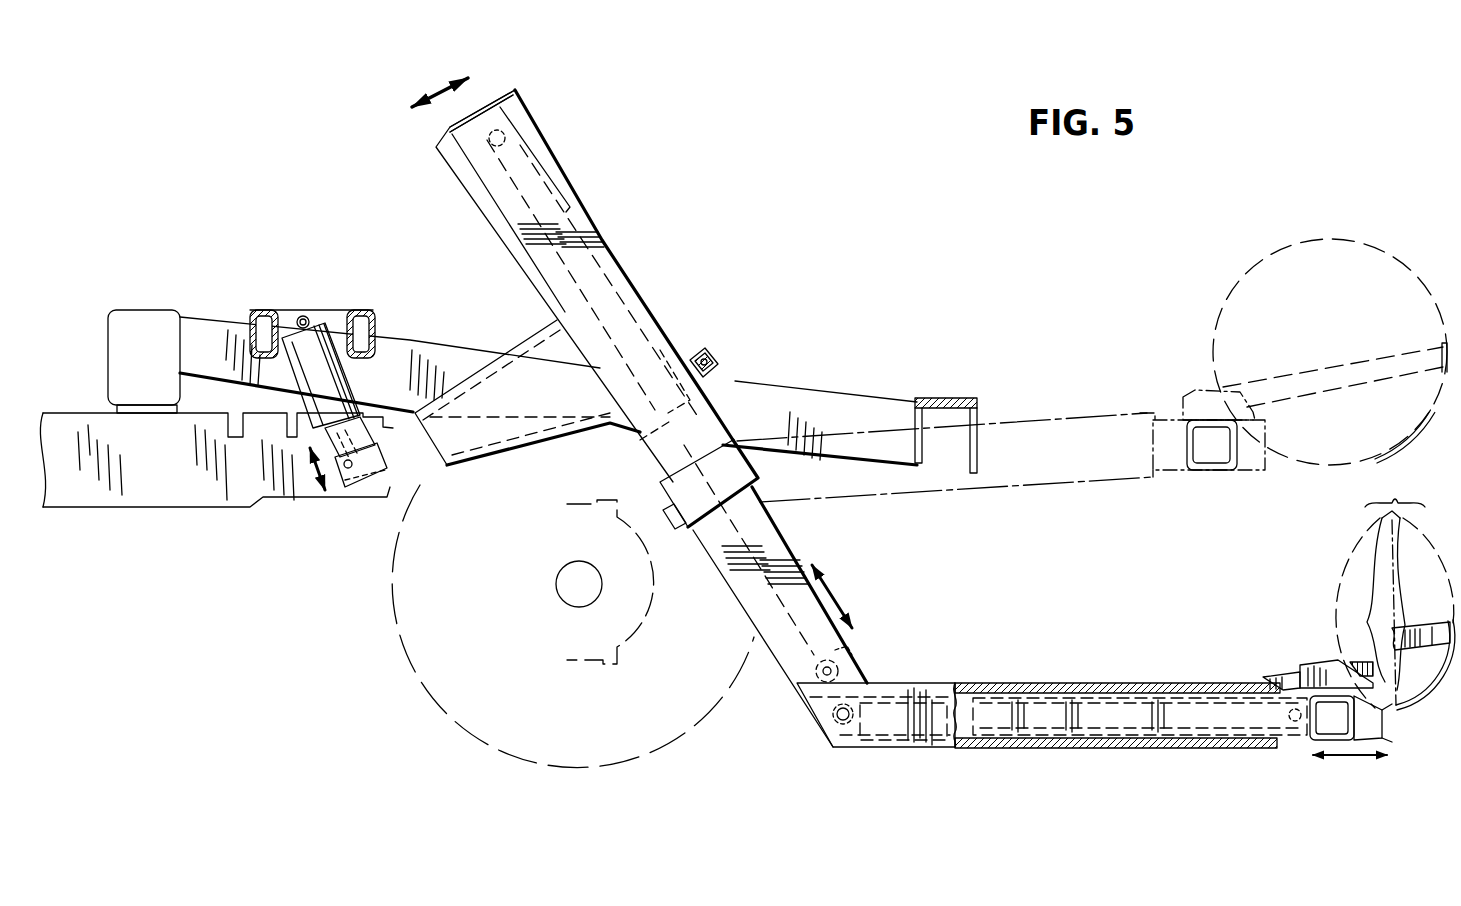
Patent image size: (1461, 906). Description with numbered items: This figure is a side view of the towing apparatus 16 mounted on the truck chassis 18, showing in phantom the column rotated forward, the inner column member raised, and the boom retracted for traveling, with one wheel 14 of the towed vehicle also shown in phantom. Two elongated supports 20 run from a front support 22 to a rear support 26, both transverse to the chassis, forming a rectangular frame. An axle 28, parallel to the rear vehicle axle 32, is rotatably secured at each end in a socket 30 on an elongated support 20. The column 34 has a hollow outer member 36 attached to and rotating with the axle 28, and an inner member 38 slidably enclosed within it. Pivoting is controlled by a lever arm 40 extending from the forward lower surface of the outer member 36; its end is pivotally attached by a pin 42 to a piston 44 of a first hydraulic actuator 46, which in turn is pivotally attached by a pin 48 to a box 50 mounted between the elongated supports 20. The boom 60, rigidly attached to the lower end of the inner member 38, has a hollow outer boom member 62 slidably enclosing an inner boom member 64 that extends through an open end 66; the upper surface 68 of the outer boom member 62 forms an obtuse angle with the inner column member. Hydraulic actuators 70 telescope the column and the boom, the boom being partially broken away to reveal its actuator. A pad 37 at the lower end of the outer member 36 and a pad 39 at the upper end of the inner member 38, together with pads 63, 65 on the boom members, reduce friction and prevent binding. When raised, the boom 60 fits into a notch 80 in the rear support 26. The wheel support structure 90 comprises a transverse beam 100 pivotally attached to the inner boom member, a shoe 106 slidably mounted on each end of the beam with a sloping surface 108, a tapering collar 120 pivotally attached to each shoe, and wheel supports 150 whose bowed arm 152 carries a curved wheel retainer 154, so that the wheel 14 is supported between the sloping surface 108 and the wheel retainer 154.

The towed vehicle wheel 14 is at (1308, 294).
The towing apparatus 16 is at (753, 140).
The truck chassis 18 is at (143, 466).
The elongated support 20 is at (841, 426).
The front support 22 is at (128, 356).
The rear support 26 is at (958, 398).
The axle 28 is at (722, 366).
The socket 30 is at (708, 350).
The rear vehicle axle 32 is at (575, 593).
The column 34 is at (583, 160).
The outer member 36 is at (518, 103).
The pad 37 is at (668, 502).
The inner member 38 is at (790, 540).
The pad 39 is at (690, 358).
The lever arm 40 is at (522, 394).
The pin 42 is at (326, 488).
The piston 44 is at (320, 437).
The first hydraulic actuator 46 is at (306, 386).
The pin 48 is at (305, 316).
The box 50 is at (375, 322).
The boom 60 is at (973, 677).
The outer boom member 62 is at (905, 730).
The pad 63 is at (1256, 746).
The inner boom member 64 is at (1290, 740).
The pad 65 is at (1000, 684).
The open end 66 is at (1282, 677).
The upper surface 68 is at (893, 683).
The hydraulic actuator 70 is at (594, 204).
The notch 80 is at (975, 445).
The wheel support structure 90 is at (1186, 338).
The transverse beam 100 is at (1315, 740).
The shoe 106 is at (1383, 722).
The sloping surface 108 is at (1427, 694).
The collar 120 is at (1320, 662).
The wheel support arm 150 is at (1340, 356).
The arm 152 is at (1410, 645).
The wheel retainer 154 is at (1437, 418).